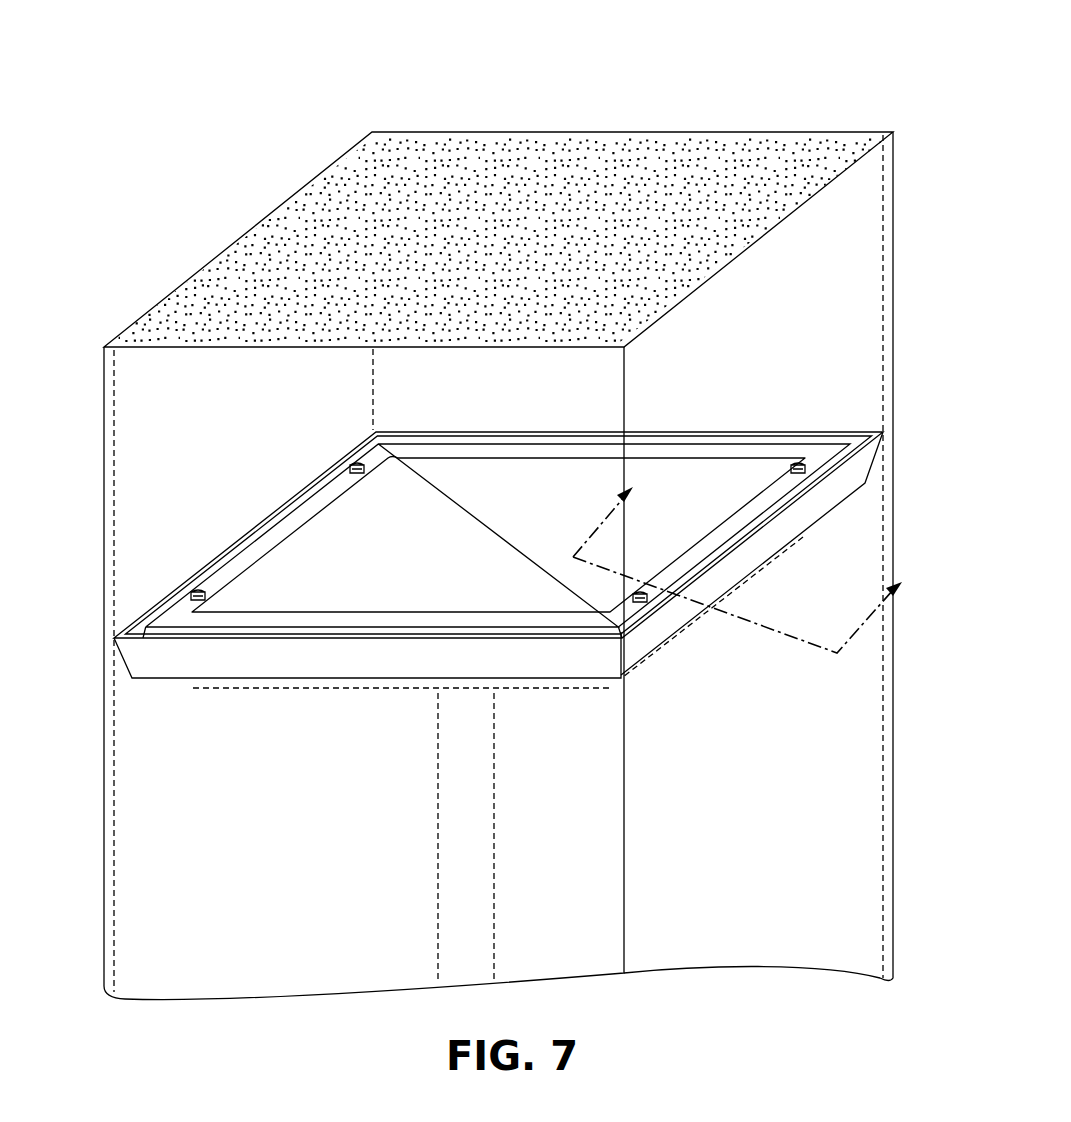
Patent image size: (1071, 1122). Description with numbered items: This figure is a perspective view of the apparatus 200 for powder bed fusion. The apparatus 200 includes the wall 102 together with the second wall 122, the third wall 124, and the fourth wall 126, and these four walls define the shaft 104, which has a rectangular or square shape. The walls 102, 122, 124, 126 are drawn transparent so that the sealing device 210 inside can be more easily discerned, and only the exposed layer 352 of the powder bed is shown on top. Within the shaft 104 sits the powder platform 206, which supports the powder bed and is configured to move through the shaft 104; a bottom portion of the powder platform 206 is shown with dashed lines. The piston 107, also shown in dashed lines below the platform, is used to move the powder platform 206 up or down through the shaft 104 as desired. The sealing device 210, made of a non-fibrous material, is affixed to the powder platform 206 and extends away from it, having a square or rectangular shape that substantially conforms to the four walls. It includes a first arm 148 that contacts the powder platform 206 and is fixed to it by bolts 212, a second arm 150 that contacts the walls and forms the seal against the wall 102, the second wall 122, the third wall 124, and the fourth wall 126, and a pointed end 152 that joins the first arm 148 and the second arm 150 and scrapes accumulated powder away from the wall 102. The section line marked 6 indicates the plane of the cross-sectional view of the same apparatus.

The apparatus 200 is at (489, 500).
The fourth wall 126 is at (498, 204).
The exposed layer 352 is at (534, 137).
The wall 102 is at (872, 300).
The third wall 124 is at (104, 438).
The second wall 122 is at (613, 823).
The shaft 104 is at (783, 939).
The piston 107 is at (477, 907).
The sealing device 210 is at (498, 567).
The first arm 148 is at (498, 536).
The second arm 150 is at (257, 640).
The pointed end 152 is at (143, 678).
The powder platform 206 is at (455, 545).
The bolts 212 is at (356, 465).
The section line 6- 6 is at (748, 562).